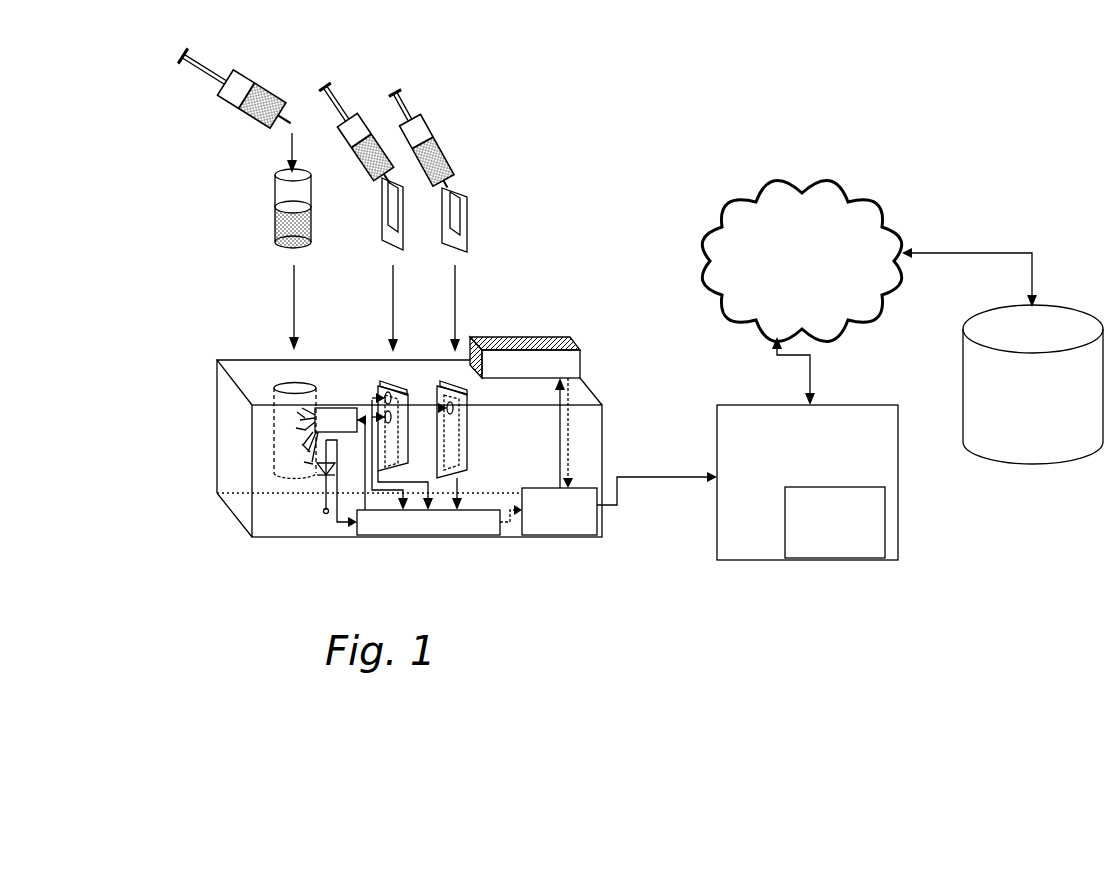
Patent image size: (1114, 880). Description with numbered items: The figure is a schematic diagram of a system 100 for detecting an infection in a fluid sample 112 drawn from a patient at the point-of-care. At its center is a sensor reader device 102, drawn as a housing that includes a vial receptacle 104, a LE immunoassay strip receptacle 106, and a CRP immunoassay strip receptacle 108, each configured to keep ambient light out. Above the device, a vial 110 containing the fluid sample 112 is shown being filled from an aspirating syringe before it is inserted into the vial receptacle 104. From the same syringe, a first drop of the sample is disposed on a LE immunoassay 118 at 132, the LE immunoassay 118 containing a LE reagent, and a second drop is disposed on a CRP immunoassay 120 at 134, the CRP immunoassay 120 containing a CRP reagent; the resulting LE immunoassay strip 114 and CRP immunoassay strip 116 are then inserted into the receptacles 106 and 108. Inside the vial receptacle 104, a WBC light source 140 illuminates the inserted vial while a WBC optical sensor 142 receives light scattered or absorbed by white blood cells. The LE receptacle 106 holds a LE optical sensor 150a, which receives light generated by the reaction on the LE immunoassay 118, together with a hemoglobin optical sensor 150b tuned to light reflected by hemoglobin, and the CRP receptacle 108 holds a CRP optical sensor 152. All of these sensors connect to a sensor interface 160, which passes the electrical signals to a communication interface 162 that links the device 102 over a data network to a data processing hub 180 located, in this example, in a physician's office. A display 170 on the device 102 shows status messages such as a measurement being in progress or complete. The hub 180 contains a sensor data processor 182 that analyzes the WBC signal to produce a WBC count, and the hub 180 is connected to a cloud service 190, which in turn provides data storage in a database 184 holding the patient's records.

The system 100 is at (774, 112).
The sensor reader device 102 is at (245, 518).
The vial receptacle 104 is at (283, 382).
The LE immunoassay strip receptacle 106 is at (392, 380).
The CRP immunoassay strip receptacle 108 is at (457, 382).
The vial 110 is at (275, 188).
The fluid sample 112 is at (275, 212).
The LE immunoassay strip 114 is at (395, 247).
The CRP immunoassay strip 116 is at (465, 247).
The LE immunoassay 118 is at (390, 218).
The CRP immunoassay 120 is at (460, 225).
The disposing of first drop on LE immunoassay 132 is at (355, 82).
The disposing of second drop on CRP immunoassay 134 is at (452, 131).
The WBC light source 140 is at (322, 408).
The WBC optical sensor 142 is at (313, 495).
The LE optical sensor 150a is at (392, 418).
The hemoglobin optical sensor 150b is at (395, 400).
The CRP optical sensor 152 is at (454, 410).
The sensor interface 160 is at (413, 542).
The communication interface 162 is at (575, 543).
The display 170 is at (583, 350).
The data processing hub 180 is at (807, 482).
The sensor data processor 182 is at (835, 522).
The database 184 is at (1033, 397).
The cloud service 190 is at (869, 292).